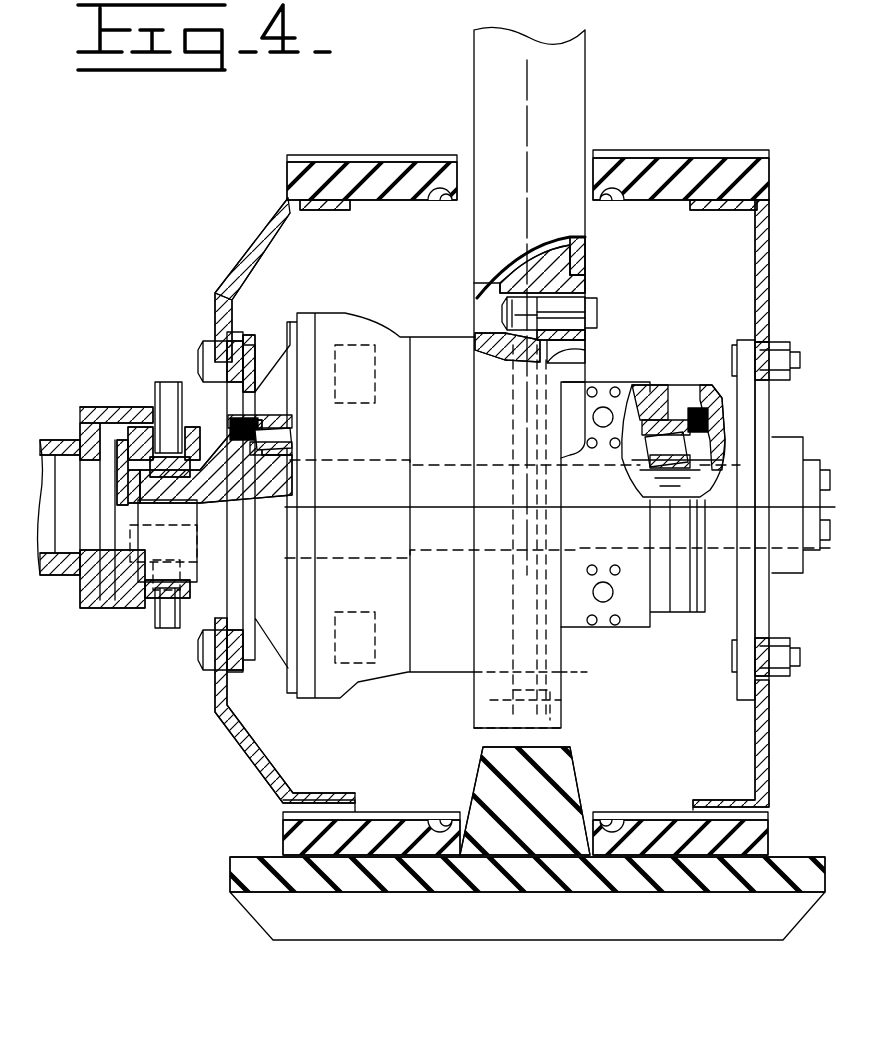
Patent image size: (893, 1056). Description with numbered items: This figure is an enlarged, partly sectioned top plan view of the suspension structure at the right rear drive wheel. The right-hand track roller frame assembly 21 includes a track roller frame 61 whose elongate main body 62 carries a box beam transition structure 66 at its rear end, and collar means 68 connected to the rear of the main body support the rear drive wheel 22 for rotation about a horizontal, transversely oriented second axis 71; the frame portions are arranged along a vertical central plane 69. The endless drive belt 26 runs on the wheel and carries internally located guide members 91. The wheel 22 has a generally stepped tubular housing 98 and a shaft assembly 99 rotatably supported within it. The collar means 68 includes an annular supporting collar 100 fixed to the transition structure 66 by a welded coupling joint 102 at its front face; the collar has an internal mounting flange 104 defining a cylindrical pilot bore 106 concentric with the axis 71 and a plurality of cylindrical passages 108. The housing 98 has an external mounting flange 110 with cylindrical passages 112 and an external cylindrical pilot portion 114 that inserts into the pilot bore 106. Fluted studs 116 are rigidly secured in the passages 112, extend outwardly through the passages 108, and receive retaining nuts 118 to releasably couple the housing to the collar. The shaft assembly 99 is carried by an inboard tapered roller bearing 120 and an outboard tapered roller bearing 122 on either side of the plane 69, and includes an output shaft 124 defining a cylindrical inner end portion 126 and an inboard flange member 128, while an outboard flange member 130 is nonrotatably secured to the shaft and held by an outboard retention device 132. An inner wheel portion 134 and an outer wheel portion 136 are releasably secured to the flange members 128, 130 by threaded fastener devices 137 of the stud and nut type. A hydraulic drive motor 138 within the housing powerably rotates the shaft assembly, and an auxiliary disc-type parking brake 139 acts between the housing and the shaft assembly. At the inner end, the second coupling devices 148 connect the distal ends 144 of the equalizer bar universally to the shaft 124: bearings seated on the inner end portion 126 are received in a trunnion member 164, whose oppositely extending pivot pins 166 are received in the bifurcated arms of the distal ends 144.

The right-hand track roller frame assembly 21 is at (262, 212).
The rear drive wheel 22 is at (250, 780).
The endless drive belt 26 is at (228, 872).
The track roller frame 61 is at (472, 222).
The elongate main body 62 is at (473, 87).
The box beam transition structure 66 is at (582, 108).
The collar means 68 is at (592, 262).
The vertical central plane 69 is at (530, 125).
The second axis 71 is at (378, 520).
The guide members 91 is at (552, 790).
The stepped tubular housing 98 is at (400, 337).
The shaft assembly 99 is at (470, 448).
The annular supporting collar 100 is at (548, 258).
The welded coupling joint 102 is at (480, 283).
The internal mounting flange 104 is at (561, 718).
The cylindrical pilot bore 106 is at (585, 353).
The cylindrical passages 108 is at (585, 290).
The external mounting flange 110 is at (480, 688).
The cylindrical passages 112 is at (515, 318).
The external cylindrical pilot portion 114 is at (558, 690).
The fluted studs 116 is at (507, 310).
The retaining nuts 118 is at (597, 316).
The inboard tapered roller bearing 120 is at (300, 437).
The outboard tapered roller bearing 122 is at (655, 395).
The output shaft 124 is at (275, 475).
The cylindrical inner end portion 126 is at (150, 515).
The inboard flange member 128 is at (232, 345).
The outboard flange member 130 is at (745, 340).
The outboard retention device 132 is at (810, 438).
The inner wheel portion 134 is at (255, 745).
The outer wheel portion 136 is at (755, 720).
The threaded fastener devices 137 is at (215, 668).
The hydraulic drive motor 138 is at (290, 708).
The auxiliary disc-type parking brake 139 is at (378, 620).
The distal ends 144 is at (112, 380).
The second coupling devices 148 is at (140, 395).
The trunnion member 164 is at (90, 420).
The pivot pins 166 is at (150, 382).